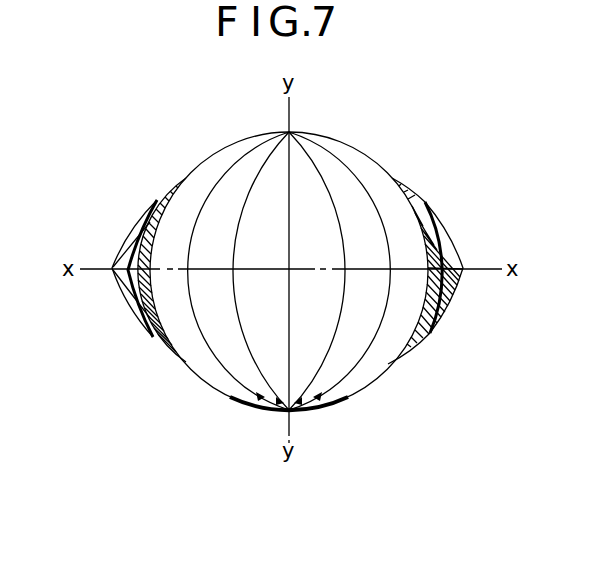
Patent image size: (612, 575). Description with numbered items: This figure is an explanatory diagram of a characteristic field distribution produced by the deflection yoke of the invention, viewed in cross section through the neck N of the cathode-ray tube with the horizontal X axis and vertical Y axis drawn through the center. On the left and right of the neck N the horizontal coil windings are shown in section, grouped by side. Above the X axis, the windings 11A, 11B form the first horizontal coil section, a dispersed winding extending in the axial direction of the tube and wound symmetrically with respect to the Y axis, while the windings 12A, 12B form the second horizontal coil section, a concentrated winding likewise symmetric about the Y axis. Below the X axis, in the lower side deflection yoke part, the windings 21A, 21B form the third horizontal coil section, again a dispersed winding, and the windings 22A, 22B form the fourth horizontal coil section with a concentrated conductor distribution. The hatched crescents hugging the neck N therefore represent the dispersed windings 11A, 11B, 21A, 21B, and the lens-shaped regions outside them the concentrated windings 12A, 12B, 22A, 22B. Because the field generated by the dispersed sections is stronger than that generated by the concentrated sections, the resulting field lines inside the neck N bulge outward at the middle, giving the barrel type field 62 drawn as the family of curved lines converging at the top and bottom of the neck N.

The neck N is at (324, 137).
The barrel type field 62 is at (362, 176).
The winding 11A is at (160, 195).
The winding 11B is at (433, 210).
The winding 12A is at (130, 238).
The winding 12B is at (456, 256).
The winding 21A is at (150, 323).
The winding 21B is at (432, 334).
The winding 22A is at (132, 295).
The winding 22B is at (460, 295).